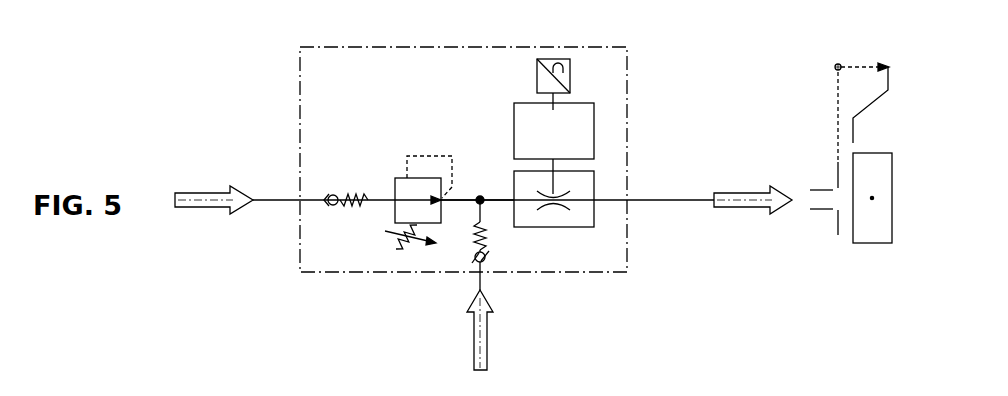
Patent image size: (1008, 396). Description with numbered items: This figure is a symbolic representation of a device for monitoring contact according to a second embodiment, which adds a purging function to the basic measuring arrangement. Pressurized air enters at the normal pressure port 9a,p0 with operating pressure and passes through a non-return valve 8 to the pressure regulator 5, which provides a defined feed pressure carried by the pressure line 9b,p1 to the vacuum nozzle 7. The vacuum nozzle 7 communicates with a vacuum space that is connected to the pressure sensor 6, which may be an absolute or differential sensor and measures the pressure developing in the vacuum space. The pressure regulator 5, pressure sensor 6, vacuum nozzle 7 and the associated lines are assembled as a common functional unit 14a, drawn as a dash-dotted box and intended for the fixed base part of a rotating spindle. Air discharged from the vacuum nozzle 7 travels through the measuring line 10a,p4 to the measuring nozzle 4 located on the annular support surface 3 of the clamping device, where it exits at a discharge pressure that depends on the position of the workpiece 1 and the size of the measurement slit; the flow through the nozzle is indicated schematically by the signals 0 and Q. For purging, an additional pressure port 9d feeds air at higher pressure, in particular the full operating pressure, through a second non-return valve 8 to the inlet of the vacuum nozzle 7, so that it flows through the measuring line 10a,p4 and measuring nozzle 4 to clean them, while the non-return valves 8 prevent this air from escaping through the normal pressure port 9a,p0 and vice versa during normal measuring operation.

The pressure port with operating pressure 9a,p0 is at (218, 192).
The non-return valve 8 is at (333, 195).
The pressure regulator 5 is at (400, 178).
The pressure line with feed pressure 9b,p1 is at (466, 198).
The pressure sensor 6 is at (571, 83).
The vacuum nozzle 7 is at (554, 227).
The functional unit 14a is at (377, 273).
The additional pressure port 9d is at (488, 333).
The measuring line with discharge pressure 10a,p4 is at (745, 210).
The measuring nozzle 4 is at (823, 210).
The support surface 3 is at (840, 236).
The workpiece 1 is at (864, 212).
The zero signal 0 is at (835, 55).
The flow signal Q is at (867, 88).